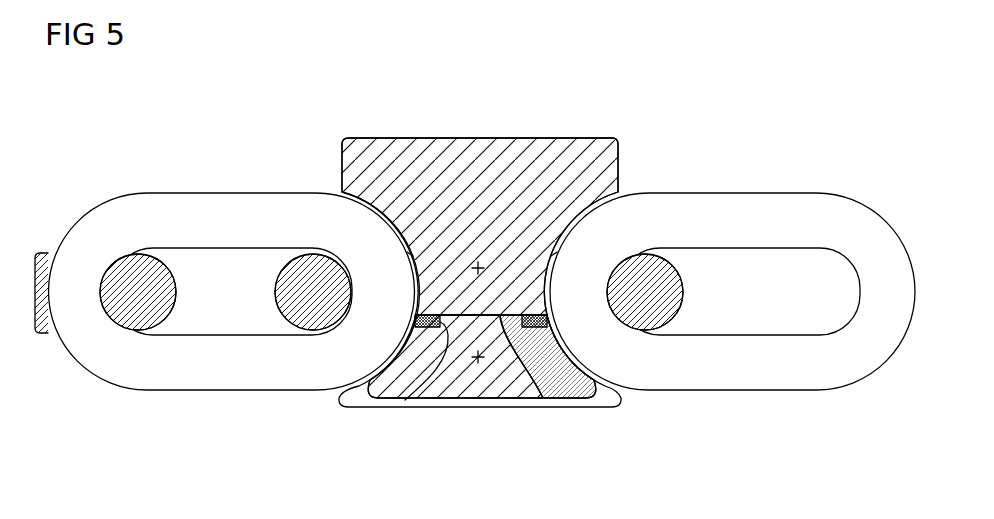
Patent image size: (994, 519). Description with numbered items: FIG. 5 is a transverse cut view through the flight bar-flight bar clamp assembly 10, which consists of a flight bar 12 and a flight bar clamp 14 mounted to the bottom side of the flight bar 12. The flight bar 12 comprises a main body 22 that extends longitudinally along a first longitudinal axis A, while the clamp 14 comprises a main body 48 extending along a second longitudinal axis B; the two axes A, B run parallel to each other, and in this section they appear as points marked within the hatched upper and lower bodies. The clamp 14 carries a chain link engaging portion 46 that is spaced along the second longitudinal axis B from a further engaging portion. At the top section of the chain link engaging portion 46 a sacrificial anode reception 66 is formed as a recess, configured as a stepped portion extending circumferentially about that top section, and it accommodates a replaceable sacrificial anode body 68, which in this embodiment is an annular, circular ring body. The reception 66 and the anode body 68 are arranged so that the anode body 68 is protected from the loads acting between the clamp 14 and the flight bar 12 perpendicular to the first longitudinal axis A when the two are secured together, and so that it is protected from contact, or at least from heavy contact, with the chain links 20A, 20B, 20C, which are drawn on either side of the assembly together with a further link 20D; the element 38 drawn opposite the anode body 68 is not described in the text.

The flight bar-flight bar clamp assembly 10 is at (307, 138).
The flight bar 12 is at (620, 133).
The flight bar clamp 14 is at (580, 422).
The chain link 20A is at (749, 193).
The chain link 20B is at (683, 292).
The chain link 20C is at (233, 193).
The chain link pin 20D is at (172, 290).
The main body 22 is at (484, 165).
The locking element 38 is at (548, 315).
The chain link engaging portion 46 is at (543, 398).
The main body 48 is at (443, 380).
The sacrificial anode reception 66 is at (405, 400).
The sacrificial anode body 68 is at (415, 314).
The first longitudinal axis A is at (477, 264).
The second longitudinal axis B is at (480, 365).